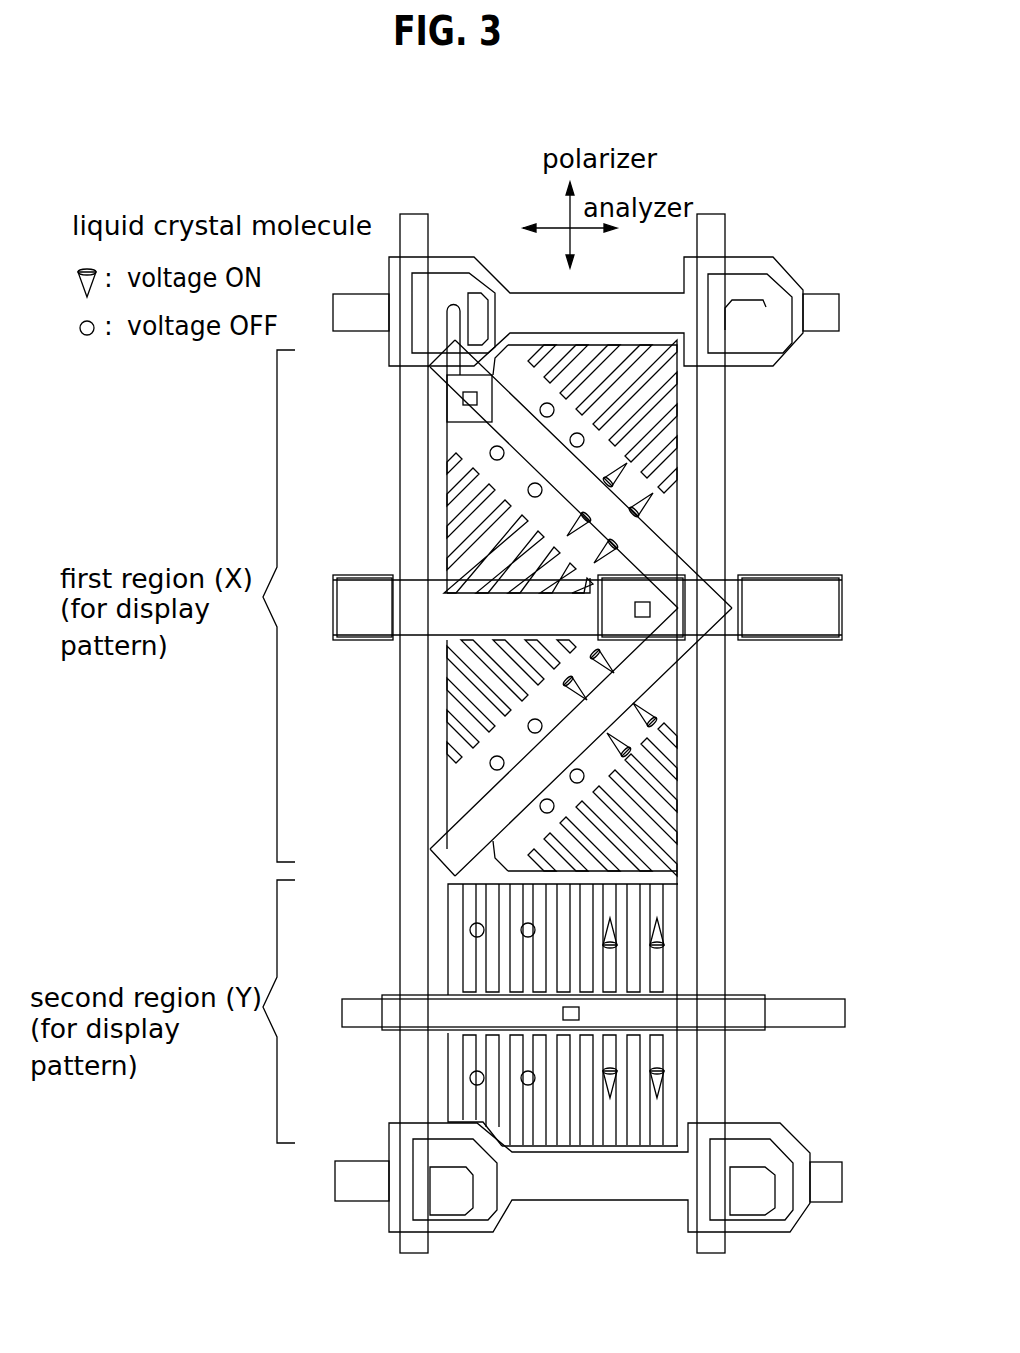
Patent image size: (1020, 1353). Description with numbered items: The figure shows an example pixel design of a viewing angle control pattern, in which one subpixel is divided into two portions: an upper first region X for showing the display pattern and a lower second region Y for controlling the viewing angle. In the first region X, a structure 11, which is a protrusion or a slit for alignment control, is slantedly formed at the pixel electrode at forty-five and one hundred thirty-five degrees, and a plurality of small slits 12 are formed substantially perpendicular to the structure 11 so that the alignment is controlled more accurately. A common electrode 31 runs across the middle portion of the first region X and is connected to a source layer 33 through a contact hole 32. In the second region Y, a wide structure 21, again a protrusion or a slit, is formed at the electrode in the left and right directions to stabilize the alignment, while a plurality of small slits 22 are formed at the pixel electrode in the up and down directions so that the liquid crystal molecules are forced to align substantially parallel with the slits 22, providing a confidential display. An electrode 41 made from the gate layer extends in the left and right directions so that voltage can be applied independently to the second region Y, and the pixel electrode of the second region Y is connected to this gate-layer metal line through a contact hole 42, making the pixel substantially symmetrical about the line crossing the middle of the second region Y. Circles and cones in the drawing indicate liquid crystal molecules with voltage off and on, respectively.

The structure (protrusion or slit) for alignment control 11 is at (662, 563).
The small slits 12 is at (672, 425).
The wide structure (protrusion or slit) 21 is at (757, 1033).
The small slits 22 is at (672, 896).
The common electrode 31 is at (375, 620).
The contact hole 32 is at (765, 682).
The source layer 33 is at (618, 640).
The electrode 41 is at (833, 1013).
The contact hole 42 is at (579, 1014).